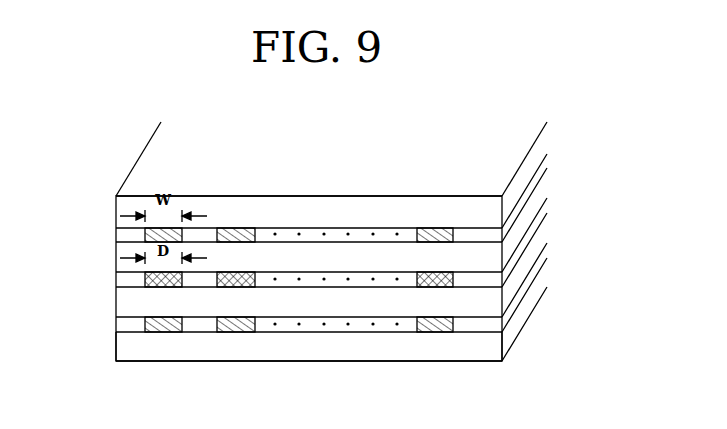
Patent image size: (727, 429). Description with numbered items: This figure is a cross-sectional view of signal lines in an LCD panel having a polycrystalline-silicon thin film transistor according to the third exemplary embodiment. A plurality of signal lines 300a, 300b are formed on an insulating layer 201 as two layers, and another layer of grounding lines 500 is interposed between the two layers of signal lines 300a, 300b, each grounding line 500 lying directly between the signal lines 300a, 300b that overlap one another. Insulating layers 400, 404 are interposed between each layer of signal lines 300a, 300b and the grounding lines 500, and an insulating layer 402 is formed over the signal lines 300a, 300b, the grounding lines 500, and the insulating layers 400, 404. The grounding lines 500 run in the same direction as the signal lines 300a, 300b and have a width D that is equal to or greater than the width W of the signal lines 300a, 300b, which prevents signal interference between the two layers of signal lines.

The insulating layer 402 is at (535, 164).
The insulating layer 404 is at (535, 210).
The insulating layer 400 is at (535, 255).
The insulating layer 201 is at (535, 305).
The signal lines 300b is at (145, 237).
The grounding lines 500 is at (145, 282).
The signal lines 300a is at (145, 327).